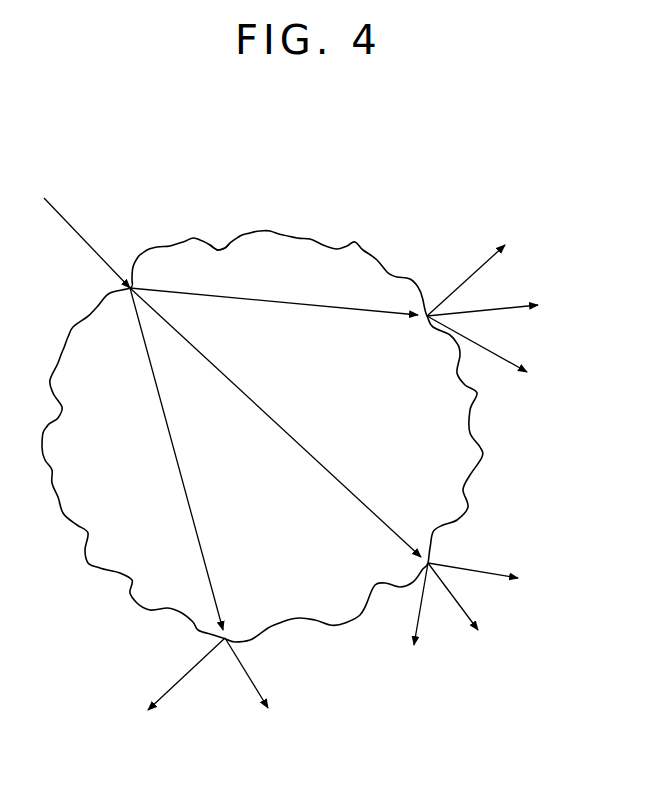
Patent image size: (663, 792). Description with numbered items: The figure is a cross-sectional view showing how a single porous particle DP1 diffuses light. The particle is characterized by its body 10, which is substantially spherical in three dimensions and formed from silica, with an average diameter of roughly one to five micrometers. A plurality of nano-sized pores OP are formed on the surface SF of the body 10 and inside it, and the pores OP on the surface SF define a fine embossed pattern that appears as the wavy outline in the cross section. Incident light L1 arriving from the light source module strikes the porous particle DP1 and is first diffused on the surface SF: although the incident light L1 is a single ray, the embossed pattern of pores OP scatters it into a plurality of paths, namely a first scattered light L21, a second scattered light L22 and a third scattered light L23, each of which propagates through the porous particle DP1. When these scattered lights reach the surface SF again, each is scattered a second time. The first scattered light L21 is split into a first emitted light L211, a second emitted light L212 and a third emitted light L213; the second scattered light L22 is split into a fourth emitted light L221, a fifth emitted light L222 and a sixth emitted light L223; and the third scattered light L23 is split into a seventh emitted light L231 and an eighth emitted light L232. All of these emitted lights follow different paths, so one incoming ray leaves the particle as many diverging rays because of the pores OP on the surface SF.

The porous particle DP1 is at (147, 178).
The body 10 is at (353, 273).
The surface SF is at (290, 232).
The pores OP is at (222, 247).
The incident light L1 is at (87, 239).
The first scattered light L21 is at (274, 295).
The second scattered light L22 is at (275, 422).
The third scattered light L23 is at (179, 459).
The first emitted light L211 is at (480, 268).
The second emitted light L212 is at (505, 306).
The third emitted light L213 is at (498, 350).
The fourth emitted light L221 is at (497, 576).
The fifth emitted light L222 is at (468, 609).
The sixth emitted light L223 is at (408, 616).
The seventh emitted light L231 is at (257, 685).
The eighth emitted light L232 is at (166, 685).